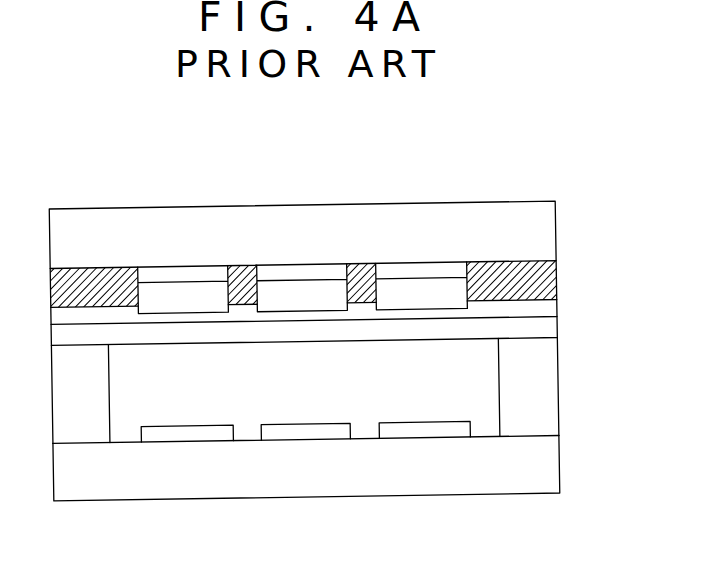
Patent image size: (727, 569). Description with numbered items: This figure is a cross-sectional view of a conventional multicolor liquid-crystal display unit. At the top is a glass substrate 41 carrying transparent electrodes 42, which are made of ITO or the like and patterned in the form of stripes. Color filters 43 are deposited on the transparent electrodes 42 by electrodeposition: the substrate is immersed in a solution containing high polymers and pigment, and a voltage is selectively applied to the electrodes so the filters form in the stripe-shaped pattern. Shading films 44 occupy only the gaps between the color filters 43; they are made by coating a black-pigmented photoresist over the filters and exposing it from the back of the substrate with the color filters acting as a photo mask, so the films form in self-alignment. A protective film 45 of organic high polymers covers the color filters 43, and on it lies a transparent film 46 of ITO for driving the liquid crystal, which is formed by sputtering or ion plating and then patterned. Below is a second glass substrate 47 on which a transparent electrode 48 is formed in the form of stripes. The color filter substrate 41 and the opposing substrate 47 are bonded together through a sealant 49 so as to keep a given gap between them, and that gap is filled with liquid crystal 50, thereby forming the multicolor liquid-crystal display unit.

The glass substrate 41 is at (93, 247).
The transparent electrodes 42 is at (164, 270).
The color filters 43 is at (278, 297).
The shading films 44 is at (505, 262).
The protective film 45 is at (543, 308).
The transparent film 46 is at (545, 330).
The second glass substrate 47 is at (185, 475).
The transparent electrode 48 is at (428, 432).
The sealant 49 is at (540, 367).
The liquid crystal 50 is at (438, 385).